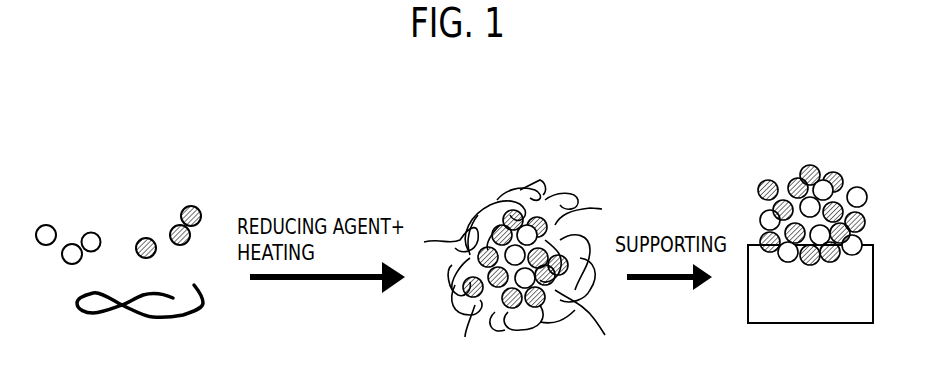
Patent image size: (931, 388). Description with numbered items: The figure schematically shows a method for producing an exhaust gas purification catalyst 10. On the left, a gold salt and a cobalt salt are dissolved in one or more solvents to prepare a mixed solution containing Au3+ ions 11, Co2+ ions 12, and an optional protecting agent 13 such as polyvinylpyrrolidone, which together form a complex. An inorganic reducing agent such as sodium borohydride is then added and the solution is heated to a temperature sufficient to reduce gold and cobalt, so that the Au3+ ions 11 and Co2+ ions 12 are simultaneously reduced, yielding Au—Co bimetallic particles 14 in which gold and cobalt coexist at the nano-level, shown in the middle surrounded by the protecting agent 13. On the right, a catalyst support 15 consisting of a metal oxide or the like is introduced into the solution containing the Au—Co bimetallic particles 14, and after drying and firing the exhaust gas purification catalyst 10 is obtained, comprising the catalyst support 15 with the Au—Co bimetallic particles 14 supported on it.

The exhaust gas purification catalyst 10 is at (820, 157).
The Au3+ ions 11 is at (56, 226).
The Co2+ ions 12 is at (199, 208).
The protecting agent 13 is at (153, 320).
The Au—Co bimetallic particles 14 is at (523, 200).
The catalyst support 15 is at (800, 323).